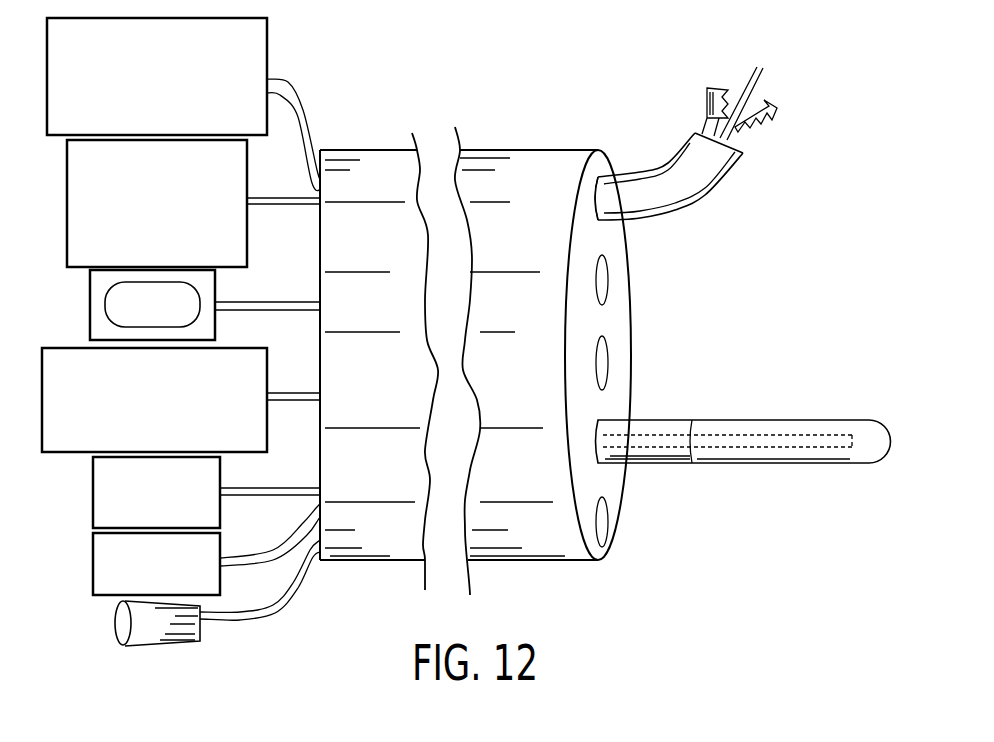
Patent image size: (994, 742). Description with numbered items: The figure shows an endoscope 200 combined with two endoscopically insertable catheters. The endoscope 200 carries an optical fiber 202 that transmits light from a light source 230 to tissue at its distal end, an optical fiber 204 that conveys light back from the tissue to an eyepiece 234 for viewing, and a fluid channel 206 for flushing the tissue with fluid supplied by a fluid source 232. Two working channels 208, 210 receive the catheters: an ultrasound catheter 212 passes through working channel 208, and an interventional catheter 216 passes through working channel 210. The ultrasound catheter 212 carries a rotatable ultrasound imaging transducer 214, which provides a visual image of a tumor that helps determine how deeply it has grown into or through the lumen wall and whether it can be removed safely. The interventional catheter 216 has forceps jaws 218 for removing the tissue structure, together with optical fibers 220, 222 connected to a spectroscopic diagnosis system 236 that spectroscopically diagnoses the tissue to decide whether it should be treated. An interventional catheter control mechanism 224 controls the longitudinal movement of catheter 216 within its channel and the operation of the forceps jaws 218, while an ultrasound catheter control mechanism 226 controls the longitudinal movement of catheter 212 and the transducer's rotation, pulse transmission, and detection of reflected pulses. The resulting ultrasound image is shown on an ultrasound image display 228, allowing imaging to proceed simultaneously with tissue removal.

The endoscope 200 is at (500, 150).
The optical fiber 202 is at (608, 280).
The optical fiber 204 is at (608, 367).
The fluid channel 206 is at (608, 536).
The working channel 208 is at (597, 425).
The working channel 210 is at (595, 178).
The endoscopically insertable catheter 212 is at (672, 465).
The rotatable ultrasound imaging transducer 214 is at (848, 465).
The endoscopically insertable catheter 216 is at (708, 192).
The forceps jaws 218 is at (716, 88).
The optical fiber 220 is at (748, 66).
The optical fiber 222 is at (766, 70).
The interventional catheter control mechanism 224 is at (267, 42).
The ultrasound catheter control mechanism 226 is at (275, 176).
The ultrasound image display 228 is at (215, 285).
The light source 230 is at (220, 472).
The fluid source 232 is at (93, 561).
The eyepiece 234 is at (183, 645).
The spectroscopic diagnosis system 236 is at (268, 370).